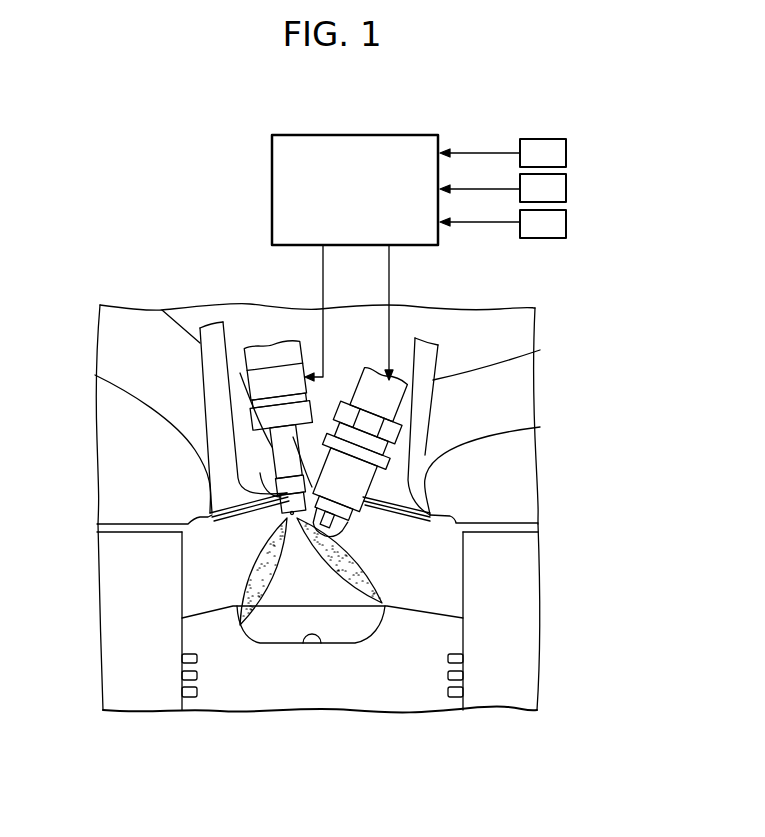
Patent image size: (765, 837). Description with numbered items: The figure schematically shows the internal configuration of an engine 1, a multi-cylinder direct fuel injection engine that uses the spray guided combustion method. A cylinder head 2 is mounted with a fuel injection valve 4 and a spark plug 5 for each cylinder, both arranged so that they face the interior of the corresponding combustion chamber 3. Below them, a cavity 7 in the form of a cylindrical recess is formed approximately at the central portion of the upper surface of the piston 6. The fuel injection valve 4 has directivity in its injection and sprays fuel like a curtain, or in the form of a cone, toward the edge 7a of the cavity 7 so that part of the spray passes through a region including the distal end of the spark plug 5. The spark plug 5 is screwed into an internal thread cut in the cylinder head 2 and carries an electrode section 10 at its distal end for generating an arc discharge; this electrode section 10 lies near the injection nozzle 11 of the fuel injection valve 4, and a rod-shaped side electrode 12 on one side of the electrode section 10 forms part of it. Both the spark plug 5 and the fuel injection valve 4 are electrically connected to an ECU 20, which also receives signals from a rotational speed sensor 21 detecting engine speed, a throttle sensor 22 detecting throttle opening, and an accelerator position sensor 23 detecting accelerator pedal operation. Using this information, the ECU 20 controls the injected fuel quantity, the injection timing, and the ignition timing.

The engine 1 is at (78, 300).
The cylinder head 2 is at (130, 475).
The combustion chamber 3 is at (448, 560).
The fuel injection valve 4 is at (280, 438).
The spark plug 5 is at (347, 472).
The piston 6 is at (257, 673).
The cavity 7 is at (323, 647).
The edge of the cavity 7a is at (237, 608).
The electrode section 10 is at (347, 521).
The injection nozzle 11 is at (275, 508).
The side electrode 12 is at (347, 535).
The ECU 20 is at (272, 153).
The rotational speed sensor 21 is at (566, 150).
The throttle sensor 22 is at (566, 185).
The accelerator position sensor 23 is at (566, 219).